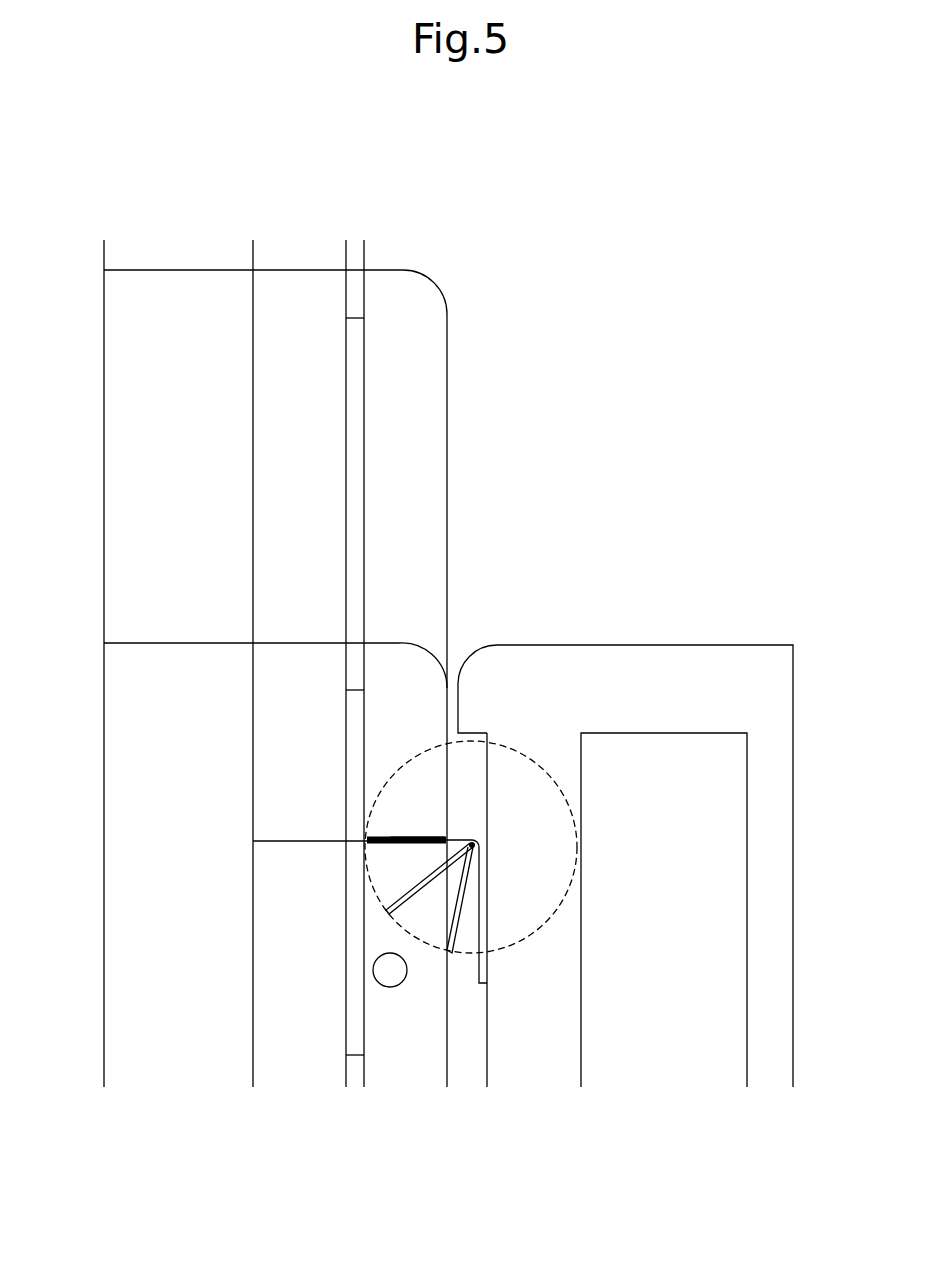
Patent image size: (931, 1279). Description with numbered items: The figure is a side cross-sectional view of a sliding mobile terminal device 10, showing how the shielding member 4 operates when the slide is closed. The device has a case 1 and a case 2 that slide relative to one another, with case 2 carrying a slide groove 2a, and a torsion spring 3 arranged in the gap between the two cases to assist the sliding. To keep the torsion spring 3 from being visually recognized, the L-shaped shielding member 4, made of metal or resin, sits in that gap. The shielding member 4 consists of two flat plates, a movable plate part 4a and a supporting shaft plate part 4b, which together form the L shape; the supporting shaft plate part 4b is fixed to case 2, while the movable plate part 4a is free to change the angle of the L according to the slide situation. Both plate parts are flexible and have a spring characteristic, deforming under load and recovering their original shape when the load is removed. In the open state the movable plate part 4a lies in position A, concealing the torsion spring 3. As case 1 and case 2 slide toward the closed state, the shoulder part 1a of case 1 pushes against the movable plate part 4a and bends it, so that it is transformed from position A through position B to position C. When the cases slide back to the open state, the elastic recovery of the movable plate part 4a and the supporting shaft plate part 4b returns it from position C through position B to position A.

The mobile terminal device 10 is at (160, 232).
The case 1 is at (422, 302).
The shoulder part of case 1a is at (428, 828).
The case 2 is at (620, 673).
The slide groove 2a is at (475, 790).
The torsion spring 3 is at (390, 978).
The shielding member 4 is at (445, 837).
The movable plate part 4a is at (407, 842).
The supporting shaft plate part 4b is at (487, 940).
The position A is at (397, 845).
The position B is at (408, 903).
The position C is at (455, 927).